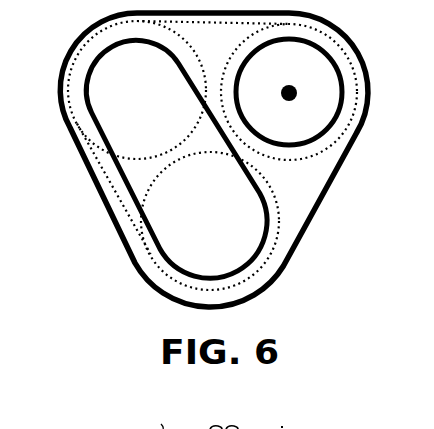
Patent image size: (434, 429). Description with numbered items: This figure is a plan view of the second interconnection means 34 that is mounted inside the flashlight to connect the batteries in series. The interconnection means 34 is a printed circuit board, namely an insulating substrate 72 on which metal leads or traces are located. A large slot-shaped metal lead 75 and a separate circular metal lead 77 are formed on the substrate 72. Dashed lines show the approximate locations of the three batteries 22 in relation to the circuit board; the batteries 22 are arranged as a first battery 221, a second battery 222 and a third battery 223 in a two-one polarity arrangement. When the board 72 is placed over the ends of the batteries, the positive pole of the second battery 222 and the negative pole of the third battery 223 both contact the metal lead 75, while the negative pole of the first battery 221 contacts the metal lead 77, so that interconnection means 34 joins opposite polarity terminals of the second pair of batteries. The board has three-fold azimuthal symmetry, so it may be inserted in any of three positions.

The batteries 22 is at (80, 47).
The interconnection means 34 is at (219, 187).
The insulating substrate 72 is at (323, 197).
The metal lead 75 is at (222, 221).
The metal lead 77 is at (316, 108).
The first battery 221 is at (315, 158).
The second battery 222 is at (98, 150).
The third battery 223 is at (280, 224).